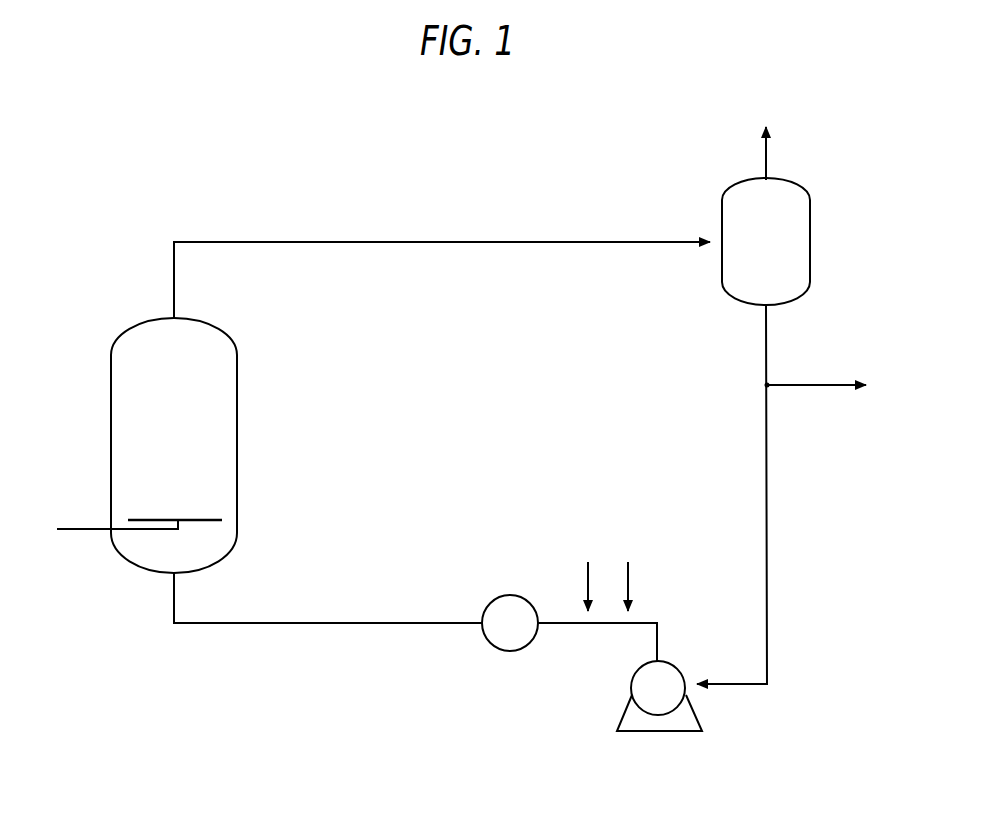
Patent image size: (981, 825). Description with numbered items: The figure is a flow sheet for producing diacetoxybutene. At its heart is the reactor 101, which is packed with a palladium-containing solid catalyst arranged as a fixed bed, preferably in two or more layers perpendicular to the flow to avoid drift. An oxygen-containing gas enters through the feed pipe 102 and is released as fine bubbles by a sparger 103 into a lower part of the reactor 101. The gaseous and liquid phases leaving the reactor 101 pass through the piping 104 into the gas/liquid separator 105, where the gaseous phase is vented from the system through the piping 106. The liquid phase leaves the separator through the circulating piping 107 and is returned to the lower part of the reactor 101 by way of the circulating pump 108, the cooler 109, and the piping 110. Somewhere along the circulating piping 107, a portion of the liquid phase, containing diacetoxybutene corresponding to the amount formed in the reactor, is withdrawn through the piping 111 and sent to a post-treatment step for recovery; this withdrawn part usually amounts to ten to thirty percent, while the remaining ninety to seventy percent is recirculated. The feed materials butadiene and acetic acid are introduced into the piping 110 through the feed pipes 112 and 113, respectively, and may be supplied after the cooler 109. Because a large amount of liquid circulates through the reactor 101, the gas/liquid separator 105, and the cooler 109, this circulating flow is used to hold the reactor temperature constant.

The reactor 101 is at (237, 445).
The feed pipe for an oxygen-containing gas 102 is at (88, 533).
The sparger 103 is at (192, 518).
The piping 104 is at (469, 241).
The gas/liquid separator 105 is at (810, 243).
The piping 106 is at (766, 142).
The circulating piping 107 is at (767, 530).
The circulating pump 108 is at (632, 677).
The cooler 109 is at (508, 595).
The piping 110 is at (352, 625).
The piping 111 is at (826, 388).
The feed pipe 112 is at (585, 592).
The feed pipe 113 is at (628, 571).